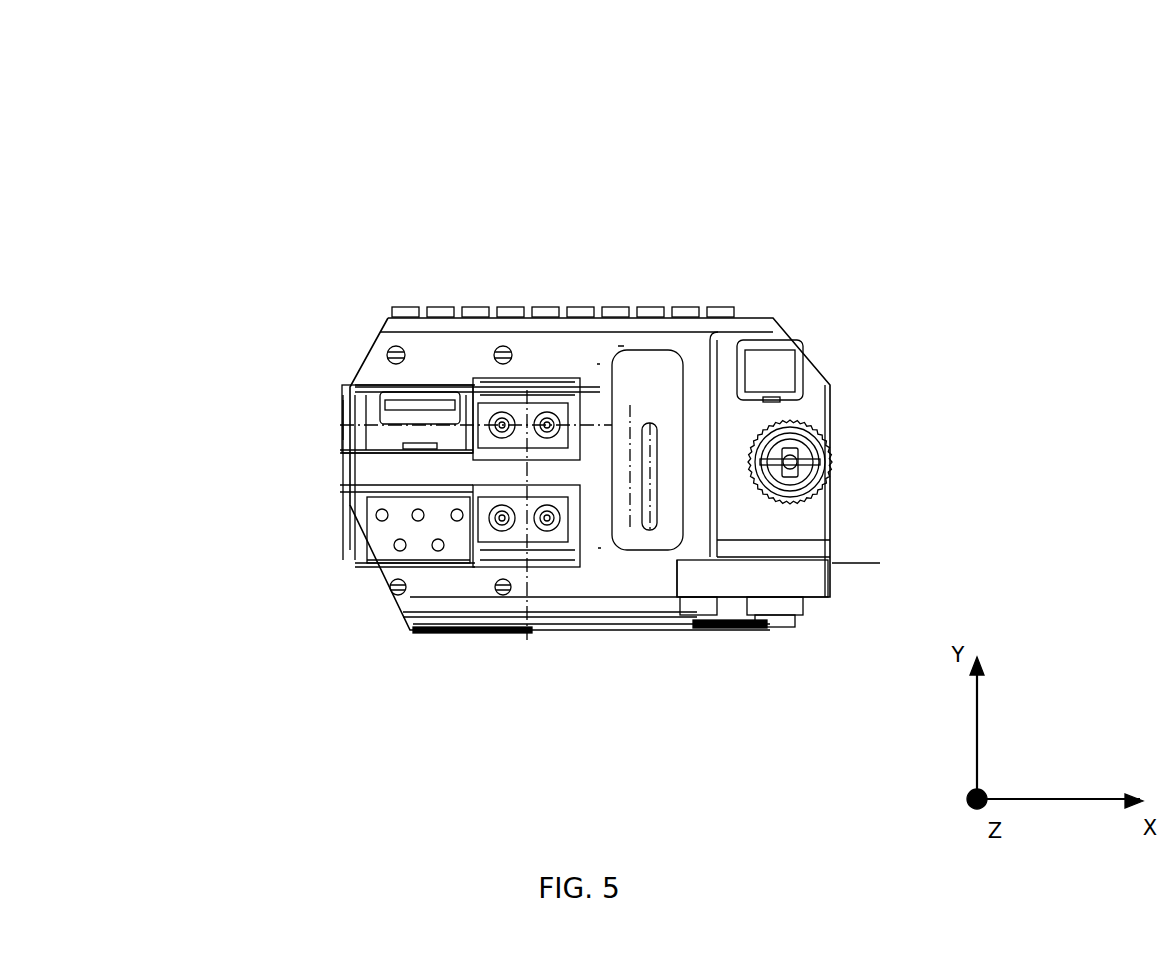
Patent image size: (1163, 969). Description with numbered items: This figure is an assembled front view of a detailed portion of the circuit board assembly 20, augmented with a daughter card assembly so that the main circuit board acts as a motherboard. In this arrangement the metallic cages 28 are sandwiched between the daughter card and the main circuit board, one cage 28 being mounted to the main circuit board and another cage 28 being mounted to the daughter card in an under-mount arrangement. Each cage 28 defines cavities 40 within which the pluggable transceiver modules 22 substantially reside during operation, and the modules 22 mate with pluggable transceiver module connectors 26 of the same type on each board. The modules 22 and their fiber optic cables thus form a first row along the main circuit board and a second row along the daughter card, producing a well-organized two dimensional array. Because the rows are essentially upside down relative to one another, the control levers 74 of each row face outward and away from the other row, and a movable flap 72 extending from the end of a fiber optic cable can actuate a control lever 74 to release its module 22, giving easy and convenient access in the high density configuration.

The circuit board assembly 20 is at (198, 112).
The pluggable transceiver module 22 is at (543, 402).
The pluggable transceiver module connector 26 is at (376, 404).
The metallic cage 28 is at (455, 384).
The cavity 40 is at (360, 552).
The movable flap 72 is at (518, 388).
The control lever 74 is at (523, 472).